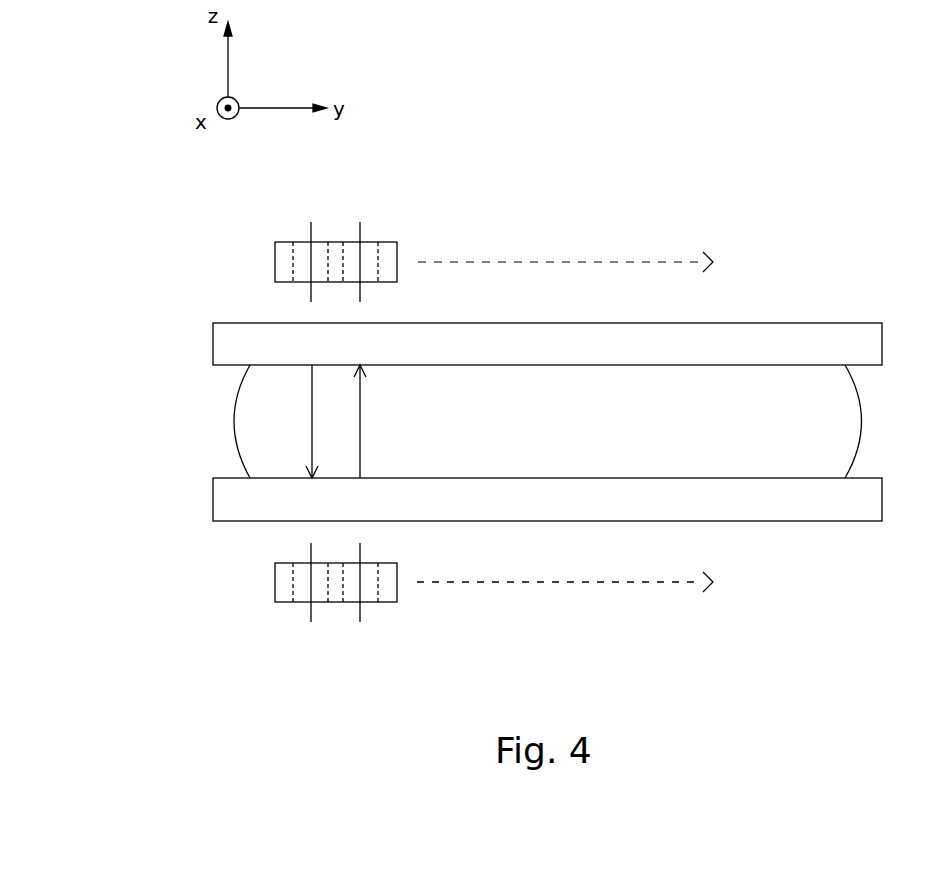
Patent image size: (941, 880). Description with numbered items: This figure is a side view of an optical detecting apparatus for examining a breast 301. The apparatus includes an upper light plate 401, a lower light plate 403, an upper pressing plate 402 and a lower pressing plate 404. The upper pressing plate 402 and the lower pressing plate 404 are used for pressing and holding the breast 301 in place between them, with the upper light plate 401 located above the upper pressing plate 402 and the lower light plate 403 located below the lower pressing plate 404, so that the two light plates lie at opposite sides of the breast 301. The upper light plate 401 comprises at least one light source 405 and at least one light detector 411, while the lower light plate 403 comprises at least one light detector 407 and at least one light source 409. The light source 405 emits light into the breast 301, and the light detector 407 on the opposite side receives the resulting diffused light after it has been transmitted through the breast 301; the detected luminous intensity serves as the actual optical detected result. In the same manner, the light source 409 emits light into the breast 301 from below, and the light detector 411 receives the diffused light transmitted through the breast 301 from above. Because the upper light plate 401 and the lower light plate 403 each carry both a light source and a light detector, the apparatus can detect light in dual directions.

The breast 301 is at (234, 420).
The upper light plate 401 is at (275, 262).
The upper pressing plate 402 is at (213, 342).
The lower light plate 403 is at (275, 581).
The lower pressing plate 404 is at (213, 500).
The light source 405 is at (311, 233).
The light detector 407 is at (311, 612).
The light source 409 is at (360, 612).
The light detector 411 is at (360, 233).